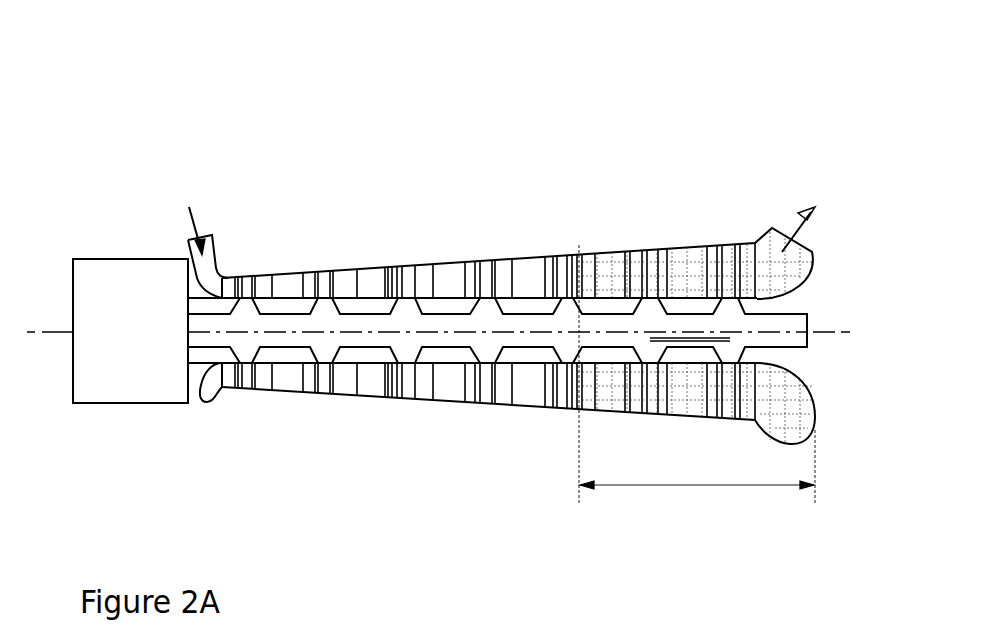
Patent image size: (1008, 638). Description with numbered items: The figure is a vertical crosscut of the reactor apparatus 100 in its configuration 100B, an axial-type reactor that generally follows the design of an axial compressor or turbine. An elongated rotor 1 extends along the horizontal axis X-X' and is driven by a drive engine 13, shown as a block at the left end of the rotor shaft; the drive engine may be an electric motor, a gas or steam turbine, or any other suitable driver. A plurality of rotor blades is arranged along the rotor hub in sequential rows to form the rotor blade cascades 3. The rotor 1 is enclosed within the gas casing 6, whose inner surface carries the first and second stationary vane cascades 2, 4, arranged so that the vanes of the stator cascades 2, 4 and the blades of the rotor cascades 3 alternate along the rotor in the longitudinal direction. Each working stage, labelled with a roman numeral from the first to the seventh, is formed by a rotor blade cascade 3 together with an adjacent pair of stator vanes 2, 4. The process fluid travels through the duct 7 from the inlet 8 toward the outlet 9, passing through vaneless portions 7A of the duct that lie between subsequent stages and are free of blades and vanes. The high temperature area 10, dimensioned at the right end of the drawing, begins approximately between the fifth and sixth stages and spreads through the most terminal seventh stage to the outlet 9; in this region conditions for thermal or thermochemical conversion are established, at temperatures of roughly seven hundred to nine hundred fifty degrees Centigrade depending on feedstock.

The rotor shaft 1 is at (782, 340).
The first stationary vane cascade 2 is at (637, 267).
The rotor blade cascade 3 is at (647, 263).
The second stationary vane cascade 4 is at (668, 260).
The gas casing 6 is at (282, 392).
The duct 7 is at (320, 225).
The vaneless portion of the duct 7A is at (372, 285).
The inlet 8 is at (185, 231).
The outlet 9 is at (811, 229).
The high temperature area 10 is at (697, 386).
The drive engine 13 is at (130, 331).
The reactor apparatus 100 is at (463, 267).
The reactor apparatus in axial-type configuration 100B is at (872, 37).